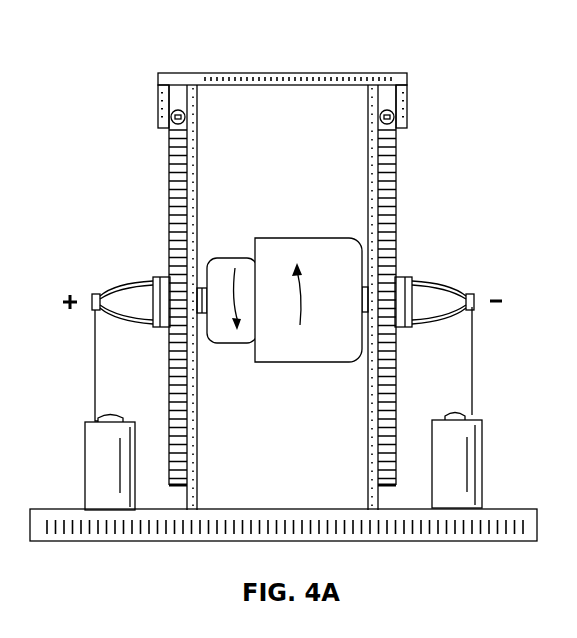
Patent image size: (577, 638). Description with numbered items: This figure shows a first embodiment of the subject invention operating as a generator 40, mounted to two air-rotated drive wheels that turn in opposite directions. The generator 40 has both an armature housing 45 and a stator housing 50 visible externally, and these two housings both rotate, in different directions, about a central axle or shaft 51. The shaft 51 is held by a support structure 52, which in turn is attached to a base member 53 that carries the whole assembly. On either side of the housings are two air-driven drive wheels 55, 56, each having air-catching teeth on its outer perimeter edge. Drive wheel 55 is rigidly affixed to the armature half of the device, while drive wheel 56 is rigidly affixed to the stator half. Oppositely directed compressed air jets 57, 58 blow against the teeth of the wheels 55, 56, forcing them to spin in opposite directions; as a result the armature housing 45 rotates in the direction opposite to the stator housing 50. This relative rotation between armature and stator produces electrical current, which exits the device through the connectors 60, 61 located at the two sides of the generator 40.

The generator 40 is at (96, 50).
The armature housing 45 is at (228, 258).
The stator housing 50 is at (303, 238).
The central axle or shaft 51 is at (207, 318).
The support structure 52 is at (313, 72).
The base member 53 is at (480, 530).
The drive wheel 55 is at (168, 202).
The drive wheel 56 is at (396, 182).
The compressed air jet 57 is at (179, 110).
The compressed air jet 58 is at (386, 110).
The connector 60 is at (127, 280).
The connector 61 is at (438, 283).